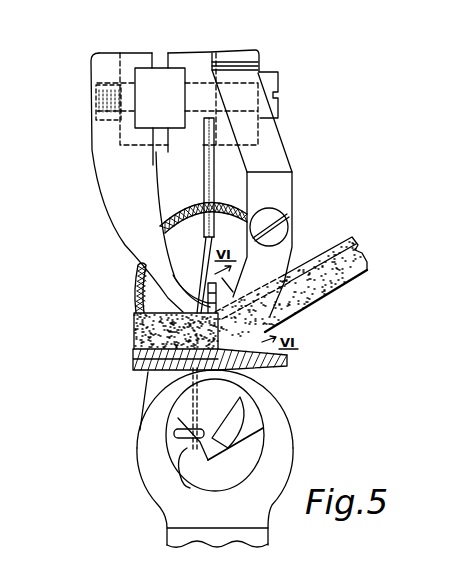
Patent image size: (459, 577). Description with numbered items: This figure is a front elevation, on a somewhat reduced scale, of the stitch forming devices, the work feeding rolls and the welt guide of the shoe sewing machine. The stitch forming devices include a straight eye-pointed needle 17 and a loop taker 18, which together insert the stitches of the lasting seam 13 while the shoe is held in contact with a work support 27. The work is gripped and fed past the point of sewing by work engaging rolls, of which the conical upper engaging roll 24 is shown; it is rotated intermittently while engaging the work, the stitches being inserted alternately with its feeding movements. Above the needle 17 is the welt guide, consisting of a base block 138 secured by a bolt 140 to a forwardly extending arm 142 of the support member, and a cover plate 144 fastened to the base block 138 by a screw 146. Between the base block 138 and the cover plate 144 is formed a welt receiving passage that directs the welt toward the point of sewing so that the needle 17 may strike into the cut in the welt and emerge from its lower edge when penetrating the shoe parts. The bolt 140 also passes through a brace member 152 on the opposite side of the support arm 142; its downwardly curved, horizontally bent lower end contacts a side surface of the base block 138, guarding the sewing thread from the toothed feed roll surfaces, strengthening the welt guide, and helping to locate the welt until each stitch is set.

The lasting seam 13 is at (138, 370).
The straight eye-pointed needle 17 is at (203, 177).
The loop taker 18 is at (240, 403).
The upper engaging roll 24 is at (137, 287).
The work support 27 is at (292, 432).
The base block 138 is at (278, 143).
The bolt 140 is at (280, 100).
The forwardly extending arm 142 is at (157, 68).
The cover plate 144 is at (283, 183).
The screw 146 is at (277, 222).
The brace member 152 is at (105, 193).